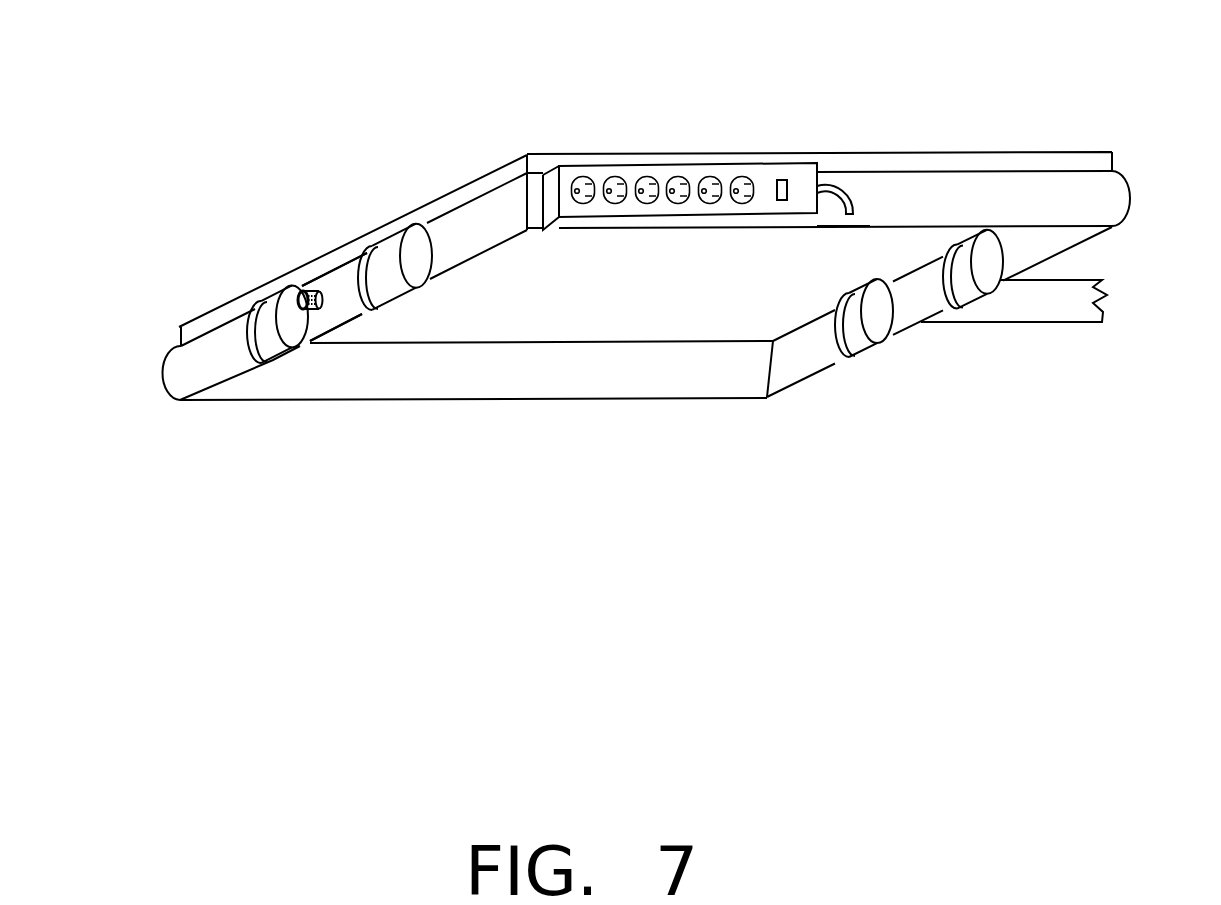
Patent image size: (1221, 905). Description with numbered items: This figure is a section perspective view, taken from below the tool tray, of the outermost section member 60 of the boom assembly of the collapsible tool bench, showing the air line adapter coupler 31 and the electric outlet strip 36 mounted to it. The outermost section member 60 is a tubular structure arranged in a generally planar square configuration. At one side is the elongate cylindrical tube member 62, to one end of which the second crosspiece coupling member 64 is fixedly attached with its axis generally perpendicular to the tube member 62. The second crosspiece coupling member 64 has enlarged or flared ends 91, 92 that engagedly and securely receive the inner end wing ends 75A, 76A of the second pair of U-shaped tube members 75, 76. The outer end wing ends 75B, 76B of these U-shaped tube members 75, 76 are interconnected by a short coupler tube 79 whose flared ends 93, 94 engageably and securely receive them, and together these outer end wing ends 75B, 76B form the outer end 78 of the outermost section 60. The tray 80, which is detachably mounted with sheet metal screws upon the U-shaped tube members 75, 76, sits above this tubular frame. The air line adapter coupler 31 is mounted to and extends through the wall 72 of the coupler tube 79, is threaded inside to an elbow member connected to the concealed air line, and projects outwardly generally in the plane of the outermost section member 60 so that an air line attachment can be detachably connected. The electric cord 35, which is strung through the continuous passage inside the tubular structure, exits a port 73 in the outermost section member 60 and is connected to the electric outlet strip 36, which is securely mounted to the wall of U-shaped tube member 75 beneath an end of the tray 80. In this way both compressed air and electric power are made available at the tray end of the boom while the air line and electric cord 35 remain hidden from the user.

The air line adapter coupler 31 is at (307, 290).
The electric cord 35 is at (842, 188).
The electric outlet strip 36 is at (673, 222).
The outermost section member 60 is at (693, 151).
The elongate cylindrical tube member 62 is at (1078, 323).
The second crosspiece coupling member 64 is at (908, 330).
The wall 72 is at (335, 318).
The port 73 is at (837, 227).
The U-shaped tube member 75 is at (952, 198).
The inner end wing end 75A is at (1073, 247).
The outer end wing end 75B is at (495, 225).
The U-shaped tube member 76 is at (527, 402).
The inner end wing end 76A is at (800, 380).
The outer end wing end 76B is at (183, 367).
The outer end 78 is at (268, 192).
The short coupler tube 79 is at (292, 312).
The tray 80 is at (467, 190).
The flared end 91 is at (980, 298).
The flared end 92 is at (868, 360).
The flared end 93 is at (382, 247).
The flared end 94 is at (257, 303).